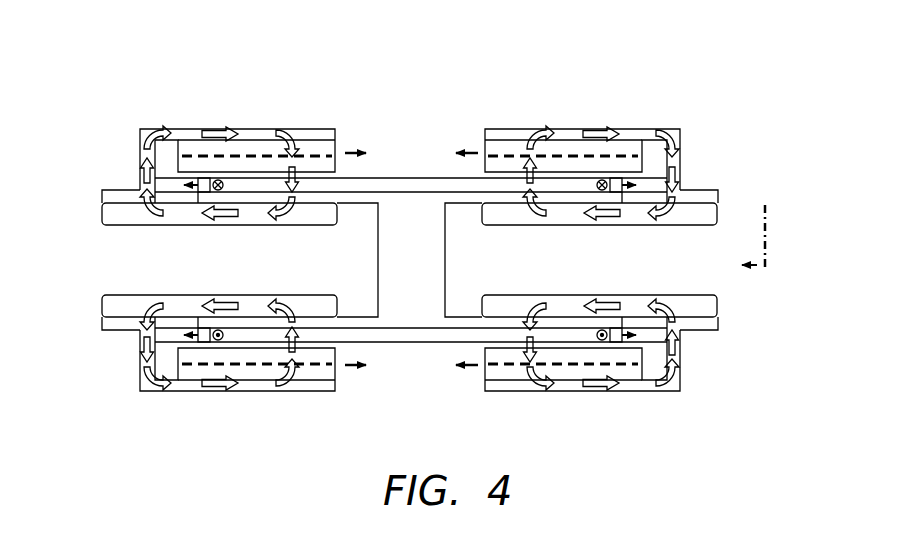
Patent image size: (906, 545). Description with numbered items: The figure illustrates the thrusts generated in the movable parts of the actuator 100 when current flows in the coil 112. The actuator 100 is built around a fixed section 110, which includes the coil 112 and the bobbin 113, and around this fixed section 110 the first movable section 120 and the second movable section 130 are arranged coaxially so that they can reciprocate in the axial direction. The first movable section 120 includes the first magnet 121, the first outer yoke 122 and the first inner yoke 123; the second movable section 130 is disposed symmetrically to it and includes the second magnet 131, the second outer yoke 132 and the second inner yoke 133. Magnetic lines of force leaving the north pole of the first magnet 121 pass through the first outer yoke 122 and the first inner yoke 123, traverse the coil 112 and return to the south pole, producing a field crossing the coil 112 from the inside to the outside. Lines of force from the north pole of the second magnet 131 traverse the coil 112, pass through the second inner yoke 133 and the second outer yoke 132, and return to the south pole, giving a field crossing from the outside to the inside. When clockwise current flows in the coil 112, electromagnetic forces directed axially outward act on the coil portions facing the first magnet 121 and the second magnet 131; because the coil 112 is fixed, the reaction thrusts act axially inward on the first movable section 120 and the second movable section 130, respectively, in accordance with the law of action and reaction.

The actuator 100 is at (102, 372).
The fixed section 110 is at (400, 172).
The coil 112 is at (377, 180).
The bobbin 113 is at (427, 245).
The first movable section 120 is at (587, 110).
The first magnet 121 is at (625, 156).
The first outer yoke 122 is at (507, 138).
The first inner yoke 123 is at (695, 216).
The second movable section 130 is at (198, 110).
The second magnet 131 is at (245, 156).
The second outer yoke 132 is at (310, 135).
The second inner yoke 133 is at (118, 207).